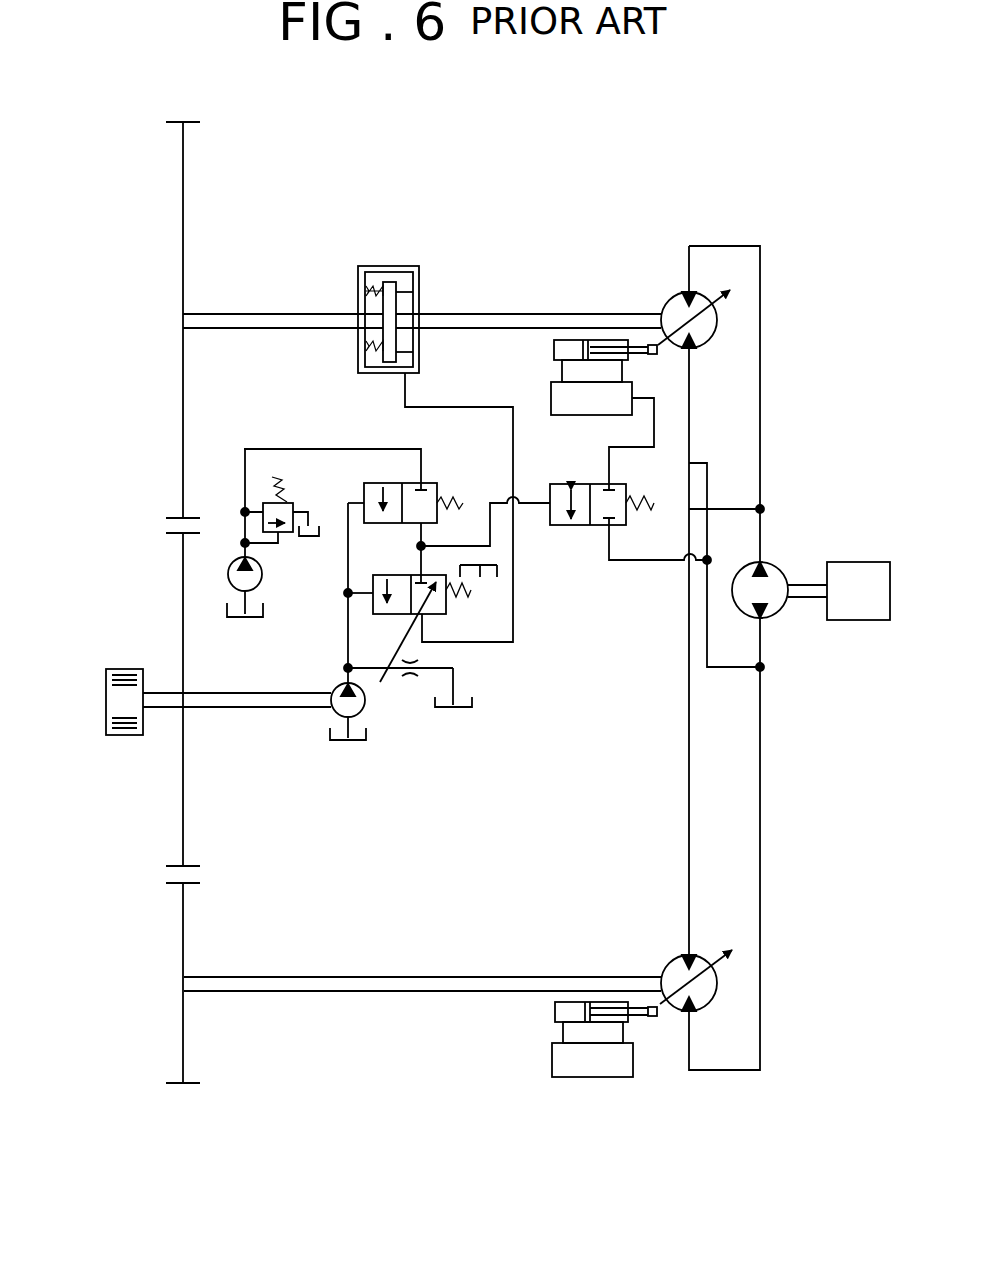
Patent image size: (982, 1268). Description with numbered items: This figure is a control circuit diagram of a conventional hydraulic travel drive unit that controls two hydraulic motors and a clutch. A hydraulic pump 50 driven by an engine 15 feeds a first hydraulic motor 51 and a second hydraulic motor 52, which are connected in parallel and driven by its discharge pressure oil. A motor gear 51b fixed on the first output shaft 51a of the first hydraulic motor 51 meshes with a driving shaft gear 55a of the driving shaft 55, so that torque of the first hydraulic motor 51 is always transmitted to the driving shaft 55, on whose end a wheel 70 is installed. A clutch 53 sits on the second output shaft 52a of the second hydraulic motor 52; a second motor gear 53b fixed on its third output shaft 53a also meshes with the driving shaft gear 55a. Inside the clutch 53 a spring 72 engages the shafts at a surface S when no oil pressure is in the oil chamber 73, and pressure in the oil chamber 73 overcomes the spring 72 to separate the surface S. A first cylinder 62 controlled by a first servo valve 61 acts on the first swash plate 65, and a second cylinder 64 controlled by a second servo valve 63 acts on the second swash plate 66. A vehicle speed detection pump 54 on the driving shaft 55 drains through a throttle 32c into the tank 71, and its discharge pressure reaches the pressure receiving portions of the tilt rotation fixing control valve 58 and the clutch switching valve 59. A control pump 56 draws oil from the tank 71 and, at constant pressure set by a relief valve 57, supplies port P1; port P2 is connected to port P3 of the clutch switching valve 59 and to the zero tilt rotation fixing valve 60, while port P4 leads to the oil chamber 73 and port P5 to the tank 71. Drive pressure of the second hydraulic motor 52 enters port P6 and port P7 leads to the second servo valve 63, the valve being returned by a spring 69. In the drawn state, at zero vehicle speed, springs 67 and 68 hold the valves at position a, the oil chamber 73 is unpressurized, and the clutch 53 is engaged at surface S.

The engine 15 is at (860, 622).
The throttle 32c is at (412, 678).
The hydraulic pump 50 is at (778, 604).
The first hydraulic motor 51 is at (707, 1005).
The first output shaft 51a is at (283, 994).
The motor gear 51b is at (184, 936).
The second hydraulic motor 52 is at (703, 338).
The second output shaft 52a is at (480, 313).
The clutch 53 is at (393, 376).
The third output shaft 53a is at (238, 330).
The second motor gear 53b is at (183, 378).
The vehicle speed detection pump 54 is at (337, 718).
The driving shaft 55 is at (218, 710).
The driving shaft gear 55a is at (183, 590).
The control pump 56 is at (262, 580).
The relief valve 57 is at (297, 501).
The tilt rotation fixing control valve 58 is at (400, 483).
The clutch switching valve 59 is at (395, 616).
The zero tilt rotation fixing valve 60 is at (563, 527).
The first servo valve 61 is at (563, 1063).
The first cylinder 62 is at (555, 1010).
The second servo valve 63 is at (560, 398).
The second cylinder 64 is at (554, 350).
The first swash plate 65 is at (723, 977).
The second swash plate 66 is at (722, 300).
The spring 67 is at (460, 500).
The spring 68 is at (457, 595).
The spring 69 is at (652, 505).
The wheel 70 is at (106, 702).
The tank 71 is at (313, 538).
The spring 72 is at (366, 287).
The oil chamber 73 is at (405, 360).
The surface S is at (405, 295).
The port P1 is at (423, 483).
The port P2 is at (418, 546).
The port P3 is at (407, 553).
The port P4 is at (401, 649).
The port P5 is at (438, 577).
The port P6 is at (607, 527).
The port P7 is at (607, 484).